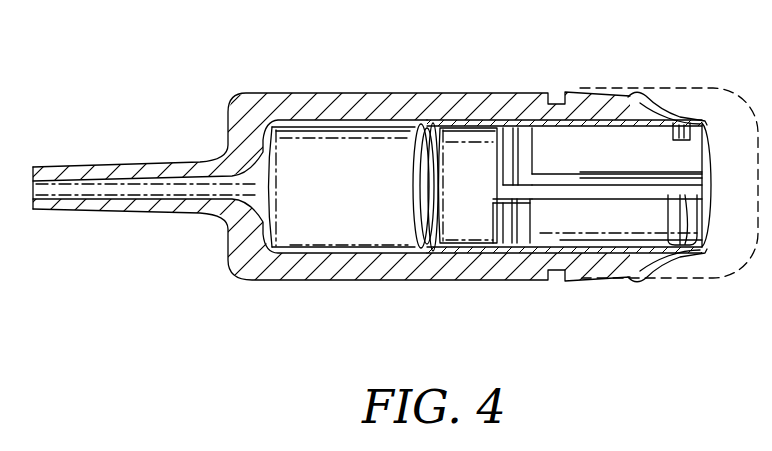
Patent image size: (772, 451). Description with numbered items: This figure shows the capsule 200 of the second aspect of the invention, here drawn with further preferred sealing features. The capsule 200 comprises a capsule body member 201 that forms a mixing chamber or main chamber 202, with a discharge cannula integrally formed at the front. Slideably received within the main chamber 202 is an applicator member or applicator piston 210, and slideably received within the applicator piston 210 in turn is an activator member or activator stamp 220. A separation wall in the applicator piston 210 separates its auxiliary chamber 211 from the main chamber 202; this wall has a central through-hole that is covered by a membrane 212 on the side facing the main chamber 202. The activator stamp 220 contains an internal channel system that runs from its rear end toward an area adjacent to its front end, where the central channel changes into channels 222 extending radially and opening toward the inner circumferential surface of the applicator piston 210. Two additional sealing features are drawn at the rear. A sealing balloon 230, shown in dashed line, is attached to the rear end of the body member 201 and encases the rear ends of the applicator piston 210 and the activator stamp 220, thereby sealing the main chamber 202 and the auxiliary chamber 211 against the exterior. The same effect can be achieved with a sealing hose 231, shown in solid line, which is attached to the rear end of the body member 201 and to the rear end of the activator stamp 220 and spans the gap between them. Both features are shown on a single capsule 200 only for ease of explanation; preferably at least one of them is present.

The capsule 200 is at (206, 287).
The capsule body member 201 is at (273, 282).
The main chamber 202 is at (322, 150).
The applicator piston 210 is at (465, 121).
The auxiliary chamber 211 is at (470, 223).
The membrane 212 is at (420, 178).
The activator stamp 220 is at (595, 140).
The channels 222 is at (519, 215).
The sealing balloon 230 is at (677, 280).
The sealing hose 231 is at (663, 113).